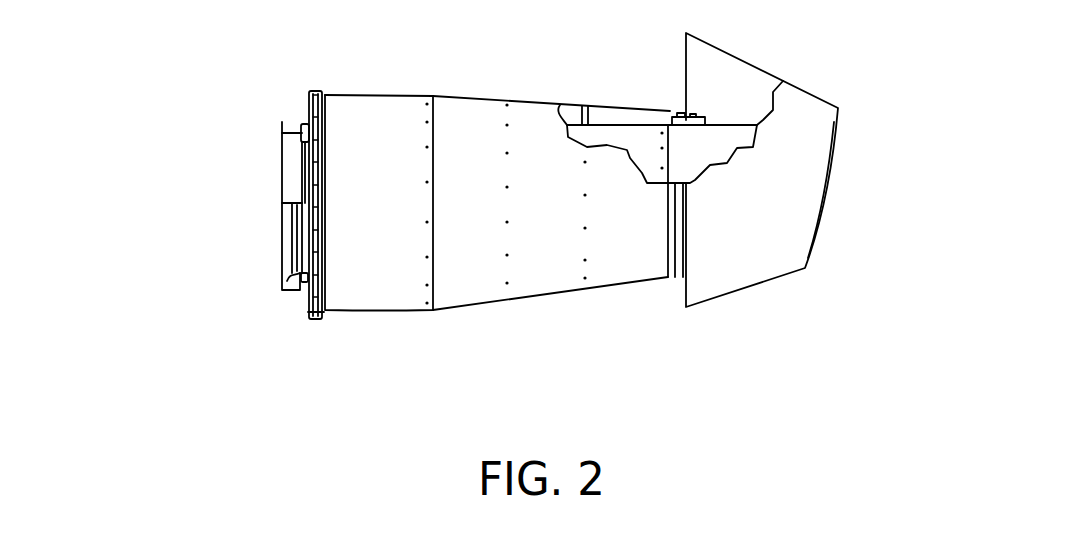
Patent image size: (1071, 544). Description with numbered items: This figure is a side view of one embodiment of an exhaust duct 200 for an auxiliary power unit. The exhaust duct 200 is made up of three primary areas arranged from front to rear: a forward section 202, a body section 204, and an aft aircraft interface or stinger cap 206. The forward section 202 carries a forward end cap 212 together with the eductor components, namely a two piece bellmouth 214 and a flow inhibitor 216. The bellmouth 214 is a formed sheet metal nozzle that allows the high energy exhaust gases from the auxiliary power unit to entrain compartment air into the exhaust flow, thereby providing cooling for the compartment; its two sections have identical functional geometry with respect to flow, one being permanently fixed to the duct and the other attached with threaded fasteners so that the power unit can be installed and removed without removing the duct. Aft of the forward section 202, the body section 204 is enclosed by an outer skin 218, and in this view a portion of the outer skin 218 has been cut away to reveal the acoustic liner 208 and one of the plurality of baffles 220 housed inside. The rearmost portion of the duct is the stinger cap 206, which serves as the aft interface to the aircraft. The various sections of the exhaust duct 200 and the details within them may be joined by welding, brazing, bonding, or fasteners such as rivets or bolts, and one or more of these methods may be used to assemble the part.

The exhaust duct 200 is at (202, 127).
The forward section 202 is at (248, 257).
The body section 204 is at (560, 319).
The stinger cap 206 is at (750, 284).
The acoustic liner 208 is at (627, 124).
The forward end cap 212 is at (307, 311).
The bellmouth 214 is at (282, 122).
The flow inhibitor 216 is at (315, 92).
The outer skin 218 is at (414, 95).
The baffle 220 is at (583, 106).